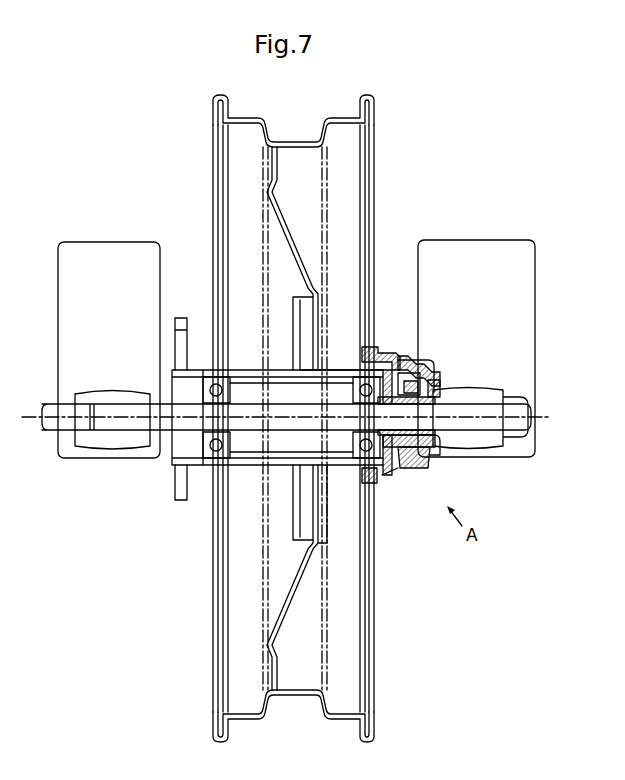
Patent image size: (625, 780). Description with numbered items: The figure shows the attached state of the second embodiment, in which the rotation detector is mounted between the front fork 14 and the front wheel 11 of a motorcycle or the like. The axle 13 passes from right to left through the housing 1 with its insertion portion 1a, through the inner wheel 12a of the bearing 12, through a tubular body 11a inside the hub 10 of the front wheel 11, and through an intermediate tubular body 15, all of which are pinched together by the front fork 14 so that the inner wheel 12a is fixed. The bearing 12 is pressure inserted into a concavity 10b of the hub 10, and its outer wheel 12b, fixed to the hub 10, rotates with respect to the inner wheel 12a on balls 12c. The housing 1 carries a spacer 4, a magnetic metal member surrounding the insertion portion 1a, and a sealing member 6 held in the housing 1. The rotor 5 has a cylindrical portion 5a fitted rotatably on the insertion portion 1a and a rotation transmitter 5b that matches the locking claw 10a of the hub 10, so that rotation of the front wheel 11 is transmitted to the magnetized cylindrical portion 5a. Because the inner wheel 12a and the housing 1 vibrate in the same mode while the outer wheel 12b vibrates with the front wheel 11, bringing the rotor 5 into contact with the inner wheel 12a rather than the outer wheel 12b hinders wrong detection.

The housing 1 is at (432, 462).
The insertion portion 1a is at (406, 462).
The spacer 4 is at (437, 443).
The rotor 5 is at (406, 470).
The cylindrical portion 5a is at (432, 384).
The rotation transmitter 5b is at (388, 401).
The sealing member 6 is at (375, 497).
The hub 10 is at (392, 345).
The locking claw 10a is at (410, 362).
The concavity 10b is at (357, 378).
The front wheel 11 is at (355, 547).
The tubular body 11a is at (270, 431).
The bearing 12 is at (351, 465).
The inner wheel 12a is at (327, 392).
The outer wheel 12b is at (335, 366).
The balls 12c is at (313, 448).
The axle 13 is at (490, 415).
The front fork 14 is at (517, 268).
The intermediate tubular body 15 is at (177, 433).